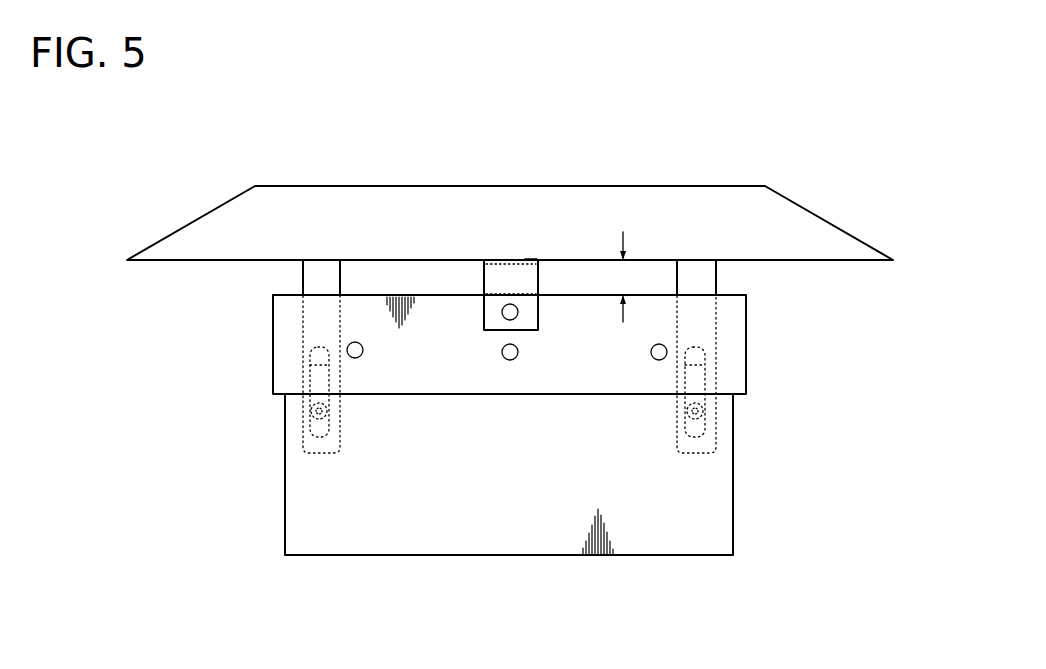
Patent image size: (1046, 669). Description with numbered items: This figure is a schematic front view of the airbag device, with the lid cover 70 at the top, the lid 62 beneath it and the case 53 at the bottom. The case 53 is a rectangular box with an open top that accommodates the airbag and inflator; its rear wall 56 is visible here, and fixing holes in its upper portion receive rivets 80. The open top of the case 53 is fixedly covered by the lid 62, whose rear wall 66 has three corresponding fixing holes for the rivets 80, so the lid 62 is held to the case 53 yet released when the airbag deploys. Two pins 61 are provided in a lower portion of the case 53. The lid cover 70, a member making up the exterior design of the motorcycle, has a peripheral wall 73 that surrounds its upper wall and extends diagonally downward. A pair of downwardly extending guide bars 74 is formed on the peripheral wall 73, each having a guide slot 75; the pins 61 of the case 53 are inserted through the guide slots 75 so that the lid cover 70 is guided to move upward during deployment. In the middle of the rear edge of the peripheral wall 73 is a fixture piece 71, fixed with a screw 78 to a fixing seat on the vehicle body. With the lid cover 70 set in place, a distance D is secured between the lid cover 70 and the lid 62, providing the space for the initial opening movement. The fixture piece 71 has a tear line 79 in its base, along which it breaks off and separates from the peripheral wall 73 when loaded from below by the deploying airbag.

The lid cover 70 is at (842, 226).
The peripheral wall 73 is at (525, 238).
The fixture piece 71 is at (538, 282).
The tear line 79 is at (525, 258).
The screw 78 is at (514, 316).
The distance D is at (624, 281).
The guide bars 74 is at (303, 276).
The lid 62 is at (760, 342).
The rear wall 66 is at (466, 376).
The rivets 80 is at (358, 358).
The guide slot 75 is at (303, 367).
The pins 61 is at (306, 409).
The case 53 is at (745, 512).
The rear wall 56 is at (508, 492).